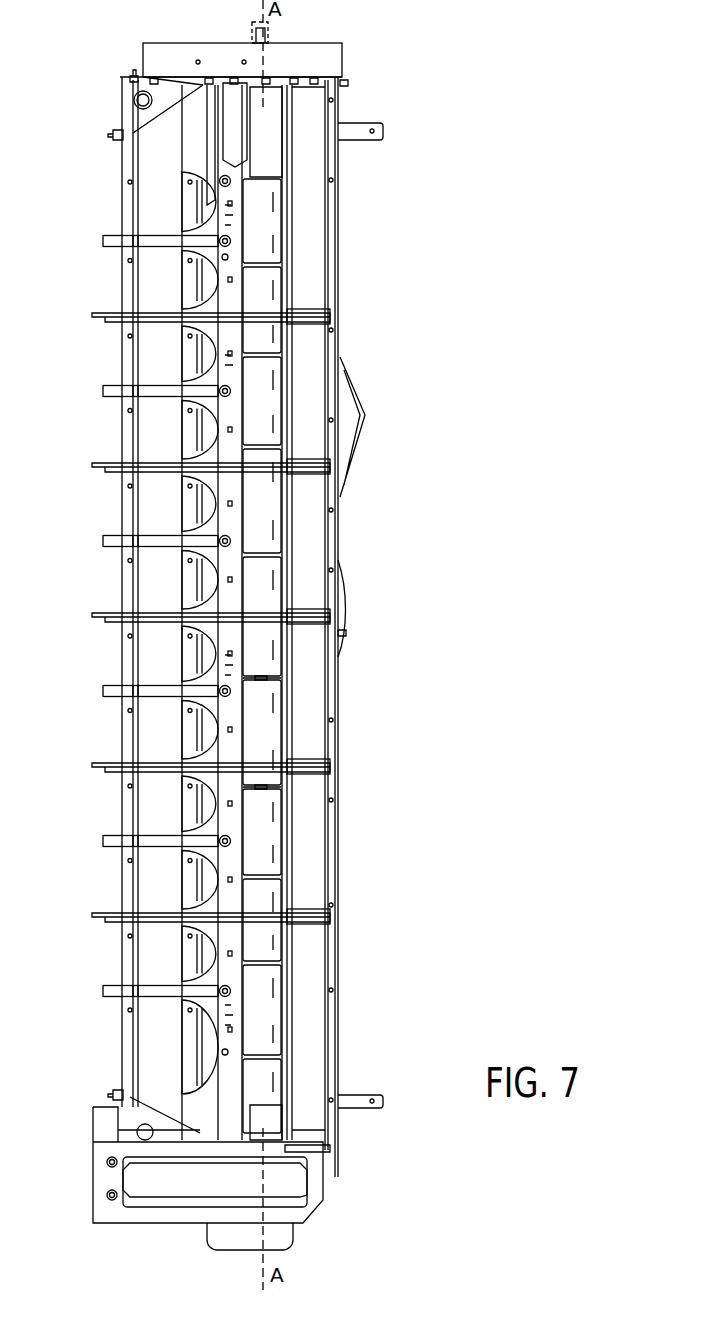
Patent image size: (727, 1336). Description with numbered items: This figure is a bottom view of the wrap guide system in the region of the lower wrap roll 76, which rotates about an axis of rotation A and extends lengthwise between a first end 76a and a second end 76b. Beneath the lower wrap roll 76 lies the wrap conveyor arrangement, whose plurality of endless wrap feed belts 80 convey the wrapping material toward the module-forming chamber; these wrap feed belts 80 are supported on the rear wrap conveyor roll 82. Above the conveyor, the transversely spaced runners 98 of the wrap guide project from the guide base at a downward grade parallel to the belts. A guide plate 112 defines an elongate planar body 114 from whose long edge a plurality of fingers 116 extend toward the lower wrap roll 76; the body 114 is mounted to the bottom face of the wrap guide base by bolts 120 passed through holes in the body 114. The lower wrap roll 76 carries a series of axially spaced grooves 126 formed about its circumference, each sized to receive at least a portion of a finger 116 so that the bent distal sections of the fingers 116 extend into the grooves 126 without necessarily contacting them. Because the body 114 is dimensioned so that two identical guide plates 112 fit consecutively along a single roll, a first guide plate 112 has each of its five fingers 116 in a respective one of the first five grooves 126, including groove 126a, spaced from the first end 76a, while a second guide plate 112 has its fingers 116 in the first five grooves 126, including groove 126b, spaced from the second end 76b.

The lower wrap roll 76 is at (262, 517).
The first end of the lower wrap roll 76a is at (273, 115).
The second end of the lower wrap roll 76b is at (262, 1120).
The wrap feed belts 80 is at (100, 460).
The rear wrap conveyor roll 82 is at (312, 222).
The runners 98 is at (162, 691).
The guide plate 112 is at (228, 865).
The elongate planar body 114 is at (228, 782).
The fingers 116 is at (252, 790).
The bolts 120 is at (233, 992).
The grooves 126 is at (336, 656).
The groove 126a is at (260, 552).
The groove 126b is at (263, 678).